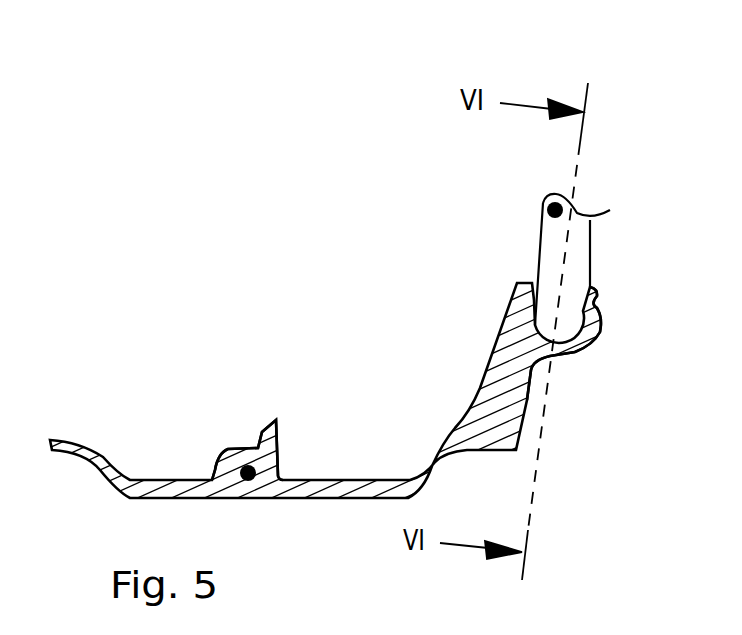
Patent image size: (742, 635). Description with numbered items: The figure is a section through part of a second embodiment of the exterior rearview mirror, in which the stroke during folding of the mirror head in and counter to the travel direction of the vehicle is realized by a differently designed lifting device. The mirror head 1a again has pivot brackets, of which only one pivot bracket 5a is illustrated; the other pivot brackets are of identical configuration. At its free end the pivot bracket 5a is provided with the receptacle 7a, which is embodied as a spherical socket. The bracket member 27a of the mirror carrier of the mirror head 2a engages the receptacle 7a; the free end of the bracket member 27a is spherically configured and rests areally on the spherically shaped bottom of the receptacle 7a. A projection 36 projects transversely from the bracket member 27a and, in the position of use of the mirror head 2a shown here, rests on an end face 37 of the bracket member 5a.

The mirror head 1a is at (246, 470).
The mirror head 2a is at (606, 234).
The pivot bracket 5a is at (500, 347).
The receptacle 7a is at (567, 357).
The bracket member 27a is at (547, 209).
The projection 36 is at (597, 292).
The end face 37 is at (603, 332).